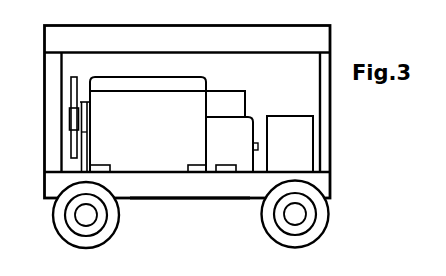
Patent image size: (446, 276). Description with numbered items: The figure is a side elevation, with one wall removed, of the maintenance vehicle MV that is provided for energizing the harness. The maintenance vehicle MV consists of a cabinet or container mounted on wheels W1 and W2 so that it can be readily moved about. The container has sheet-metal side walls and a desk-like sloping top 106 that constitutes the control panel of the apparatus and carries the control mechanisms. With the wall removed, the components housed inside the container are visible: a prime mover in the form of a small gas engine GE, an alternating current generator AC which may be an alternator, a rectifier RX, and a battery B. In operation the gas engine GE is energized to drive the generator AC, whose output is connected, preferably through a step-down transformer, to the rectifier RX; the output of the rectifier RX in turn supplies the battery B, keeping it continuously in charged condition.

The desk-like sloping top 106 is at (214, 23).
The gas engine GE is at (131, 120).
The rectifier RX is at (216, 112).
The alternating current generator AC is at (218, 142).
The battery B is at (281, 141).
The wheel W1 is at (58, 219).
The wheel W2 is at (319, 224).
The maintenance vehicle MV is at (180, 222).